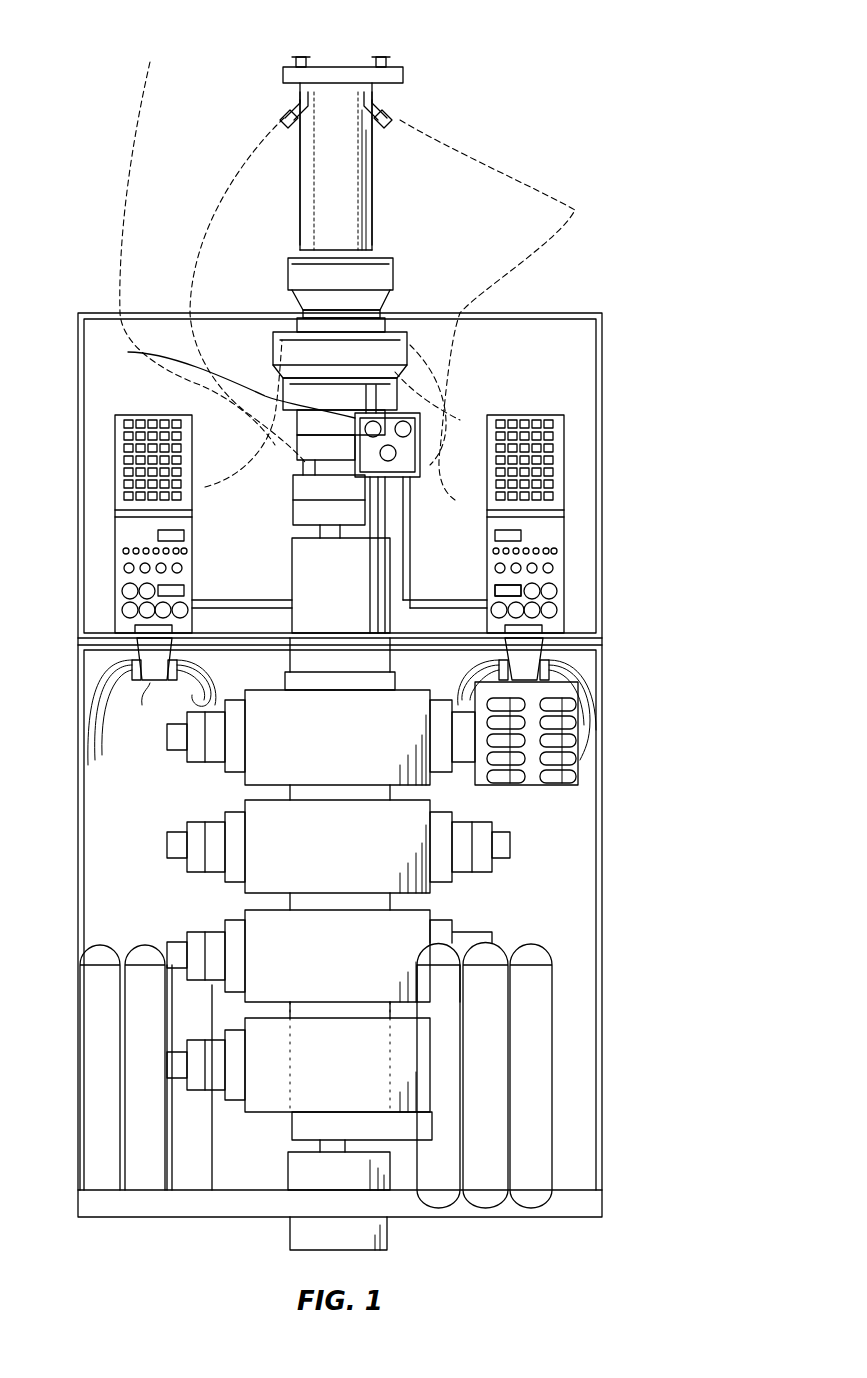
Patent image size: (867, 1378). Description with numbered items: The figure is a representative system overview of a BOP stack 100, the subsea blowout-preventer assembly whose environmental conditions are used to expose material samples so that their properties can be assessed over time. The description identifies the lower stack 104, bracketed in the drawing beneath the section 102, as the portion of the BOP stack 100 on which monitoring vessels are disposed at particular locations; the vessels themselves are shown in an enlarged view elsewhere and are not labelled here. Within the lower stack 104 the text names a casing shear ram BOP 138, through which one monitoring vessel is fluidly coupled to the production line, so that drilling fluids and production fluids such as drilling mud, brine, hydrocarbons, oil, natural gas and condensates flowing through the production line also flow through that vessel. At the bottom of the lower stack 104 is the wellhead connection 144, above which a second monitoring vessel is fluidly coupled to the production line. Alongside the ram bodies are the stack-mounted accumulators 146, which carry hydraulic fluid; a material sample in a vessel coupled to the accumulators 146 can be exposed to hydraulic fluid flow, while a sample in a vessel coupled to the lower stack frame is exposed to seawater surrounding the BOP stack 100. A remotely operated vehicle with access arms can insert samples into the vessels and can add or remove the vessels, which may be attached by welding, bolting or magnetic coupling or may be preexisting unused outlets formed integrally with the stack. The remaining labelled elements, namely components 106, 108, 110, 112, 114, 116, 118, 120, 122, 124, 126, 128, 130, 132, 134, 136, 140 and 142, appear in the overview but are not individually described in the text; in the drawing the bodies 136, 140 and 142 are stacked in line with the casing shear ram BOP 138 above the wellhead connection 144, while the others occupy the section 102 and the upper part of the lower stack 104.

The BOP stack 100 is at (612, 45).
The upper housing section 102 is at (626, 313).
The lower stack 104 is at (628, 645).
The signal line 106 is at (218, 380).
The left control panel 108 is at (150, 416).
The right control panel 110 is at (522, 418).
The first conduit line 112 is at (124, 158).
The second conduit line 114 is at (220, 178).
The inlet pipe wall 116 is at (302, 215).
The inlet pipe wall 118 is at (386, 215).
The third conduit line 120 is at (578, 215).
The inlet flange assembly 122 is at (345, 65).
The valve manifold block 124 is at (360, 415).
The pump unit 126 is at (290, 580).
The left cable bundle 128 is at (152, 701).
The panel connector 130 is at (495, 594).
The right cable bundle 132 is at (600, 680).
The connector terminal block 134 is at (510, 786).
The first sensor module 136 is at (364, 752).
The casing shear ram BOP 138 is at (364, 861).
The third sensor module 140 is at (364, 971).
The fourth sensor module 142 is at (364, 1079).
The wellhead connection 144 is at (290, 1235).
The stack-mounted accumulators 146 is at (485, 965).